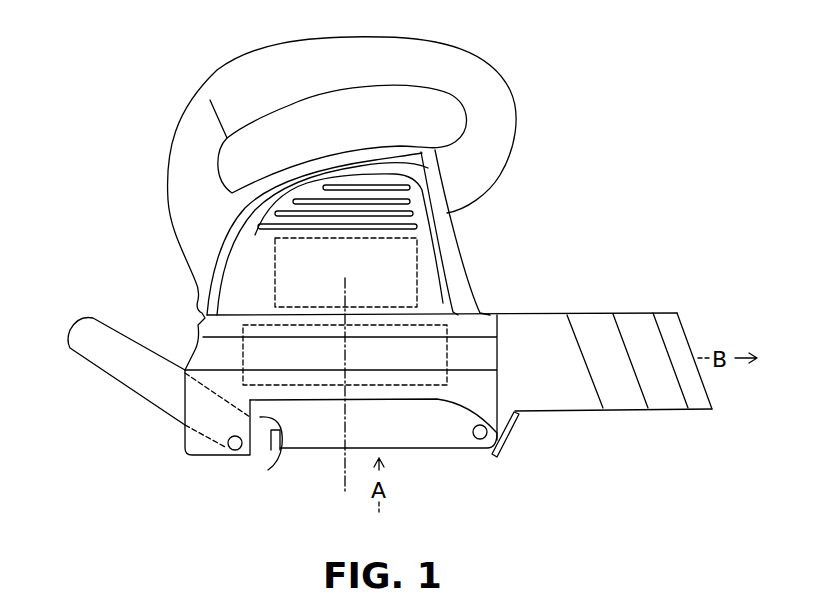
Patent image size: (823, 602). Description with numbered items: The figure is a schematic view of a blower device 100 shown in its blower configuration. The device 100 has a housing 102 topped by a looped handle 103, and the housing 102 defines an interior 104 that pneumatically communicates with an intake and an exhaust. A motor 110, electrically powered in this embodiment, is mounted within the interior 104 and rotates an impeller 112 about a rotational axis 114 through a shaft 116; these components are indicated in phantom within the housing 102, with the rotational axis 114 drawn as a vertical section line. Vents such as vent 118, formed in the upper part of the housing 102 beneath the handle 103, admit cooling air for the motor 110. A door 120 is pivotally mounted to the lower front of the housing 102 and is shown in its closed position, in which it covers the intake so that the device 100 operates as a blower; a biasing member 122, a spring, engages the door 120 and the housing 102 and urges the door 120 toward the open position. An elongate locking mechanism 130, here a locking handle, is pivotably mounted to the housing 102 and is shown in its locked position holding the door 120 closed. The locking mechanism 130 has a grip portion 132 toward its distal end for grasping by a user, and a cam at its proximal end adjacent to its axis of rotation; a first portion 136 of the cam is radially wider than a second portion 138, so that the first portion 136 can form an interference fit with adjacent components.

The blower device 100 is at (100, 62).
The housing 102 is at (456, 248).
The handle 103 is at (471, 163).
The interior 104 is at (265, 318).
The motor 110 is at (287, 275).
The impeller 112 is at (435, 318).
The rotational axis 114 is at (343, 467).
The shaft 116 is at (383, 307).
The vent 118 is at (342, 197).
The door 120 is at (400, 443).
The biasing member 122 is at (507, 440).
The locking mechanism 130 is at (97, 358).
The grip portion 132 is at (120, 373).
The first portion of the cam 136 is at (277, 457).
The second portion of the cam 138 is at (258, 452).